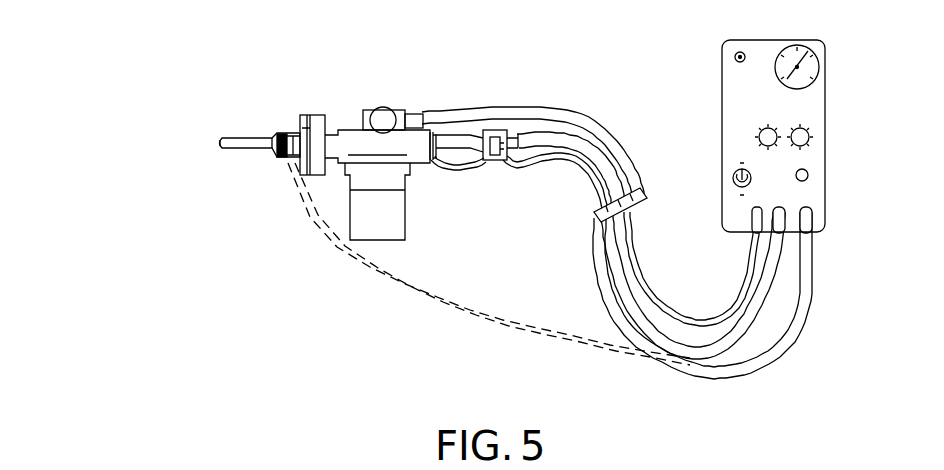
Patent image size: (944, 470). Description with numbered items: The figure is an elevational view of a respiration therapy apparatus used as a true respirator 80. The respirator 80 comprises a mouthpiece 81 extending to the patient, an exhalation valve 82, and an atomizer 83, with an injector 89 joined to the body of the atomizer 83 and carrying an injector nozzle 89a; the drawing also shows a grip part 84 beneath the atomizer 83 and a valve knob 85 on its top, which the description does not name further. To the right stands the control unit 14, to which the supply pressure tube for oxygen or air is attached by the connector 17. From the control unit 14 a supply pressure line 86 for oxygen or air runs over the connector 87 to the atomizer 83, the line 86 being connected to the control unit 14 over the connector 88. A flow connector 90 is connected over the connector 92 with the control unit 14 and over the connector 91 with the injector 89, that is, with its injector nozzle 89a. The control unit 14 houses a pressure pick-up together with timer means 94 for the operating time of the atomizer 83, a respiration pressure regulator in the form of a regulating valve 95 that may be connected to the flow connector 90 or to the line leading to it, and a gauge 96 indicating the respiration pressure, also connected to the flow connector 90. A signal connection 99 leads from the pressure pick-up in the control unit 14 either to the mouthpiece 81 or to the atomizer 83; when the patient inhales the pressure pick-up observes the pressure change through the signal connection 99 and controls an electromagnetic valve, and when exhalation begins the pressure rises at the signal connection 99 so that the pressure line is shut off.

The control unit 14 is at (824, 88).
The connector 17 is at (740, 50).
The respirator 80 is at (365, 104).
The mouthpiece 81 is at (250, 145).
The exhalation valve 82 is at (318, 170).
The atomizer 83 is at (353, 135).
The grip 84 is at (397, 213).
The valve knob 85 is at (383, 113).
The supply pressure line 86 is at (567, 107).
The connector 87 is at (423, 113).
The connector 88 is at (818, 208).
The injector 89 is at (468, 126).
The injector nozzle 89a is at (498, 160).
The flow connector 90 is at (694, 316).
The connector 91 is at (522, 136).
The connector 92 is at (752, 203).
The timer means 94 is at (758, 135).
The regulating valve 95 is at (810, 136).
The gauge 96 is at (810, 53).
The signal connection 99 is at (600, 277).